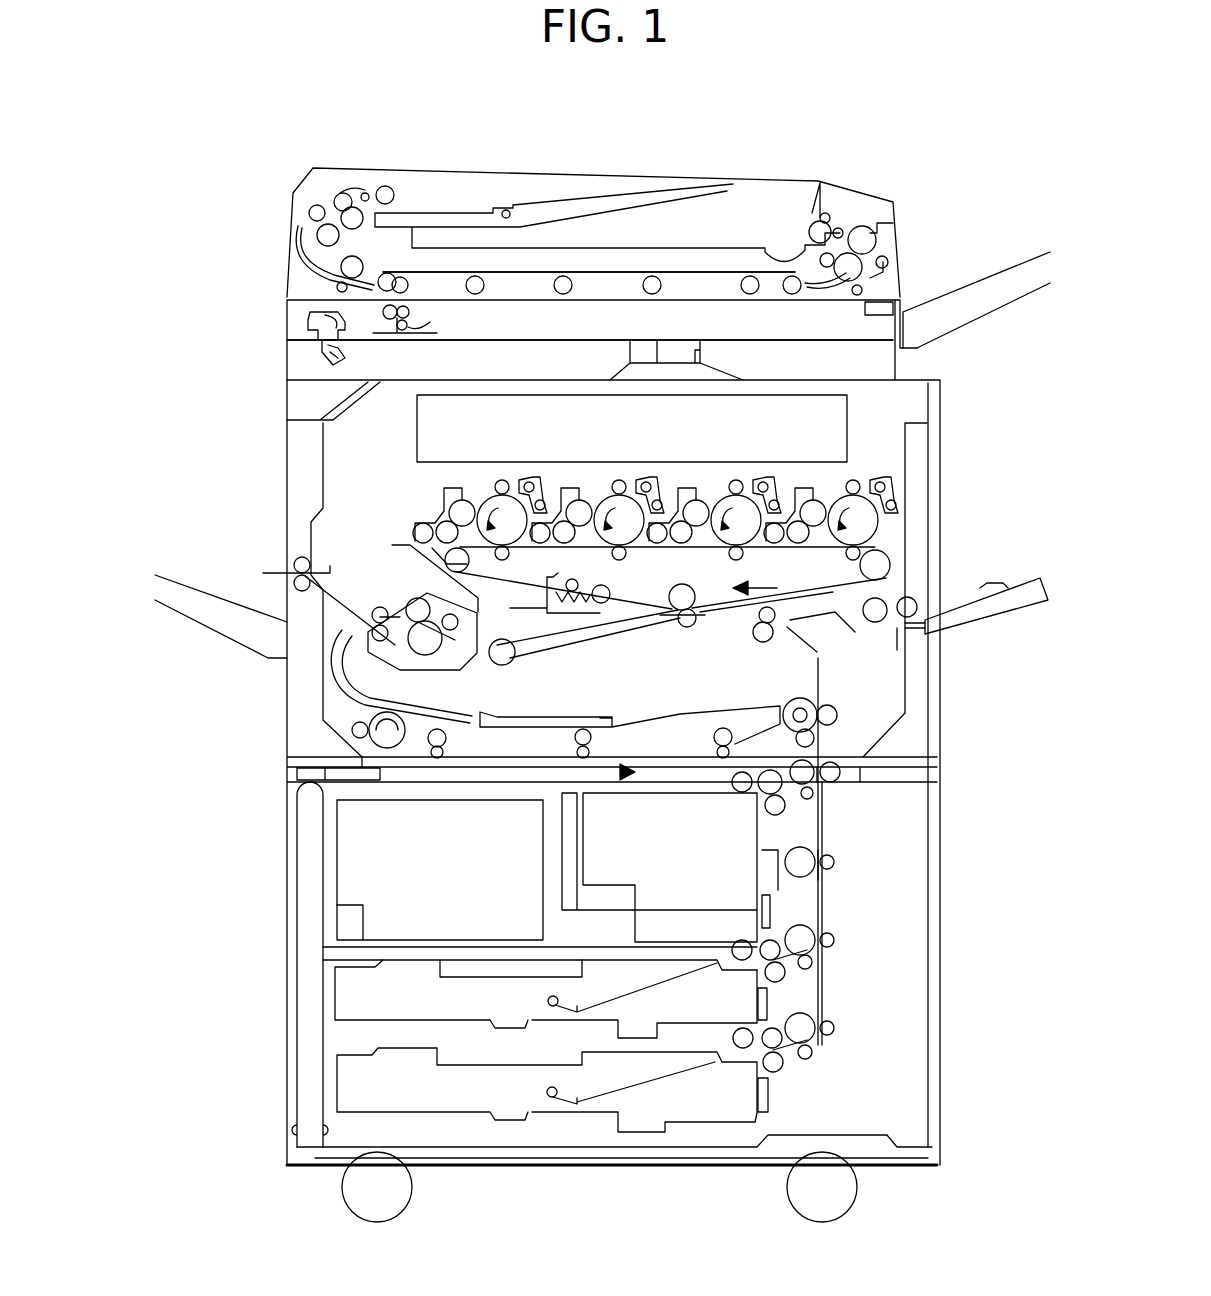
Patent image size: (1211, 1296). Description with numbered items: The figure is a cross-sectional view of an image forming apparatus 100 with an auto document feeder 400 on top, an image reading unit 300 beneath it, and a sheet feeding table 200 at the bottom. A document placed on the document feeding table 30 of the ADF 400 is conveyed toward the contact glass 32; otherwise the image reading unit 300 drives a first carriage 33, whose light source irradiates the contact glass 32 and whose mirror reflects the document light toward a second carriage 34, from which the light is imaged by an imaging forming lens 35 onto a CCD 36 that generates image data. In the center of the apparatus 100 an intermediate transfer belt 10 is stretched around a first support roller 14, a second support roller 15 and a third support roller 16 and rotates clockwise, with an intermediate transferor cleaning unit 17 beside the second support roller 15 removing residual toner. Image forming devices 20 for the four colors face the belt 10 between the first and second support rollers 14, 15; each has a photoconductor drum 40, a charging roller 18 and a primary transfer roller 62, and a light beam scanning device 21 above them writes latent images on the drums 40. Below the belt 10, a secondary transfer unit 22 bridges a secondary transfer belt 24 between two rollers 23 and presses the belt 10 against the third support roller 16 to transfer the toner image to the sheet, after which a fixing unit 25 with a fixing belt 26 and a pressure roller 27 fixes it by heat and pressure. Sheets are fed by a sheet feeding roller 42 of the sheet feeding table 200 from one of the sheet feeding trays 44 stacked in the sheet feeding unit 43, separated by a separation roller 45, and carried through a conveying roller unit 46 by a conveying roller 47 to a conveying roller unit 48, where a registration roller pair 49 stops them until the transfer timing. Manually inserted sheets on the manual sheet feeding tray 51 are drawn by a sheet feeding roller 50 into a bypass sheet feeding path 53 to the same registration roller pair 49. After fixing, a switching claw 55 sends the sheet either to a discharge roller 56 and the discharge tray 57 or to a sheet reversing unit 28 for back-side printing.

The auto document feeder (ADF) 400 is at (290, 210).
The image reading unit 300 is at (290, 325).
The image forming apparatus 100 is at (290, 455).
The sheet feeding table 200 is at (290, 878).
The document feeding table 30 is at (538, 192).
The contact glass 32 is at (705, 290).
The first carriage 33 is at (410, 335).
The second carriage 34 is at (330, 348).
The imaging forming lens 35 is at (630, 347).
The charge coupled device (CCD) 36 is at (700, 352).
The light beam scanning device 21 is at (840, 410).
The image forming device 20 is at (432, 503).
The photoconductor drum 40 is at (490, 495).
The charging roller 18 is at (503, 482).
The primary transfer roller 62 is at (510, 557).
The first support roller 14 is at (890, 568).
The secondary transfer unit 22 is at (700, 612).
The third support roller 16 is at (668, 612).
The rollers 23 is at (508, 660).
The secondary transfer belt 24 is at (605, 638).
The intermediate transfer belt 10 is at (555, 593).
The second support roller 15 is at (545, 620).
The intermediate transferor cleaning unit 17 is at (590, 612).
The fixing belt 26 is at (440, 603).
The pressure roller 27 is at (430, 640).
The fixing unit 25 is at (362, 672).
The switching claw 55 is at (393, 618).
The discharge roller 56 is at (297, 555).
The discharge tray 57 is at (210, 615).
The registration roller pair 49 is at (768, 625).
The bypass sheet feeding path 53 is at (835, 640).
The sheet feeding roller 50 is at (925, 600).
The manual sheet feeding tray 51 is at (1000, 618).
The conveying roller unit 48 is at (820, 700).
The sheet reversing unit 28 is at (632, 777).
The sheet feeding roller 42 is at (745, 800).
The separation roller 45 is at (778, 815).
The conveying roller 47 is at (830, 795).
The conveying roller unit 46 is at (822, 900).
The sheet feeding tray 44 is at (395, 940).
The sheet feeding unit 43 is at (357, 1020).